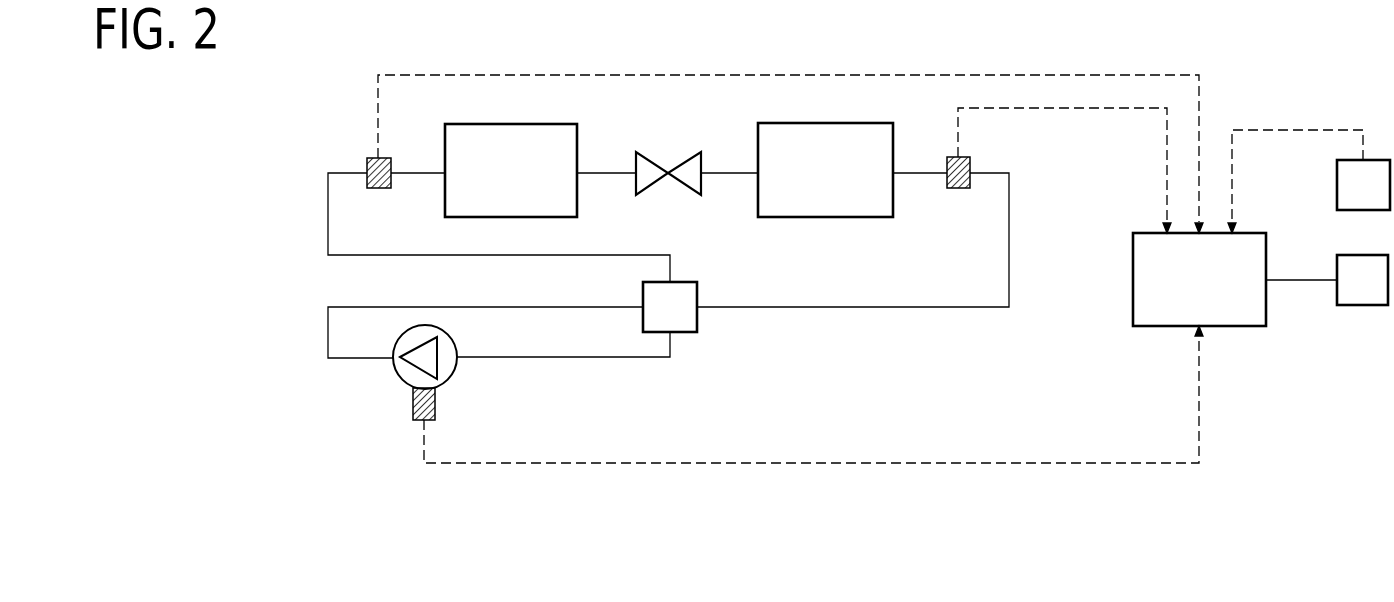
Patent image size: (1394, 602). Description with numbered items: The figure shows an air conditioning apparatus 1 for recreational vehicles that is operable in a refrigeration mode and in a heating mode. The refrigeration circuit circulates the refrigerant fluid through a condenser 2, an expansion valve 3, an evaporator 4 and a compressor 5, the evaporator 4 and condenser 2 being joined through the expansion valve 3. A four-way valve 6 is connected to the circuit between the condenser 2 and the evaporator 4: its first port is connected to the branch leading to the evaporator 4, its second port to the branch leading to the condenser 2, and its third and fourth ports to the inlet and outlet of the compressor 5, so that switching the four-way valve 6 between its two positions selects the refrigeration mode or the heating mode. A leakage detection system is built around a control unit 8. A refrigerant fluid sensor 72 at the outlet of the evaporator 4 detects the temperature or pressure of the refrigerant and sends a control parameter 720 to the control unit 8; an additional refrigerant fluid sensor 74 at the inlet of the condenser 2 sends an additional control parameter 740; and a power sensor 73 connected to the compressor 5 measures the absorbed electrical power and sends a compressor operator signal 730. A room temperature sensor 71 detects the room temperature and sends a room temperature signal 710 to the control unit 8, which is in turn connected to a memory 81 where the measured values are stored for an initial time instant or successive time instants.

The air conditioning apparatus 1 is at (280, 230).
The condenser 2 is at (818, 184).
The expansion valve 3 is at (668, 160).
The evaporator 4 is at (504, 184).
The compressor 5 is at (393, 370).
The four-way valve 6 is at (663, 320).
The control unit 8 is at (1192, 294).
The room temperature sensor 71 is at (1350, 200).
The refrigerant fluid sensor 72 is at (367, 157).
The power sensor 73 is at (412, 410).
The additional refrigerant fluid sensor 74 is at (953, 190).
The memory 81 is at (1350, 292).
The room temperature signal 710 is at (1312, 130).
The control parameter 720 is at (513, 75).
The compressor operator signal 730 is at (963, 463).
The additional control parameter 740 is at (1068, 110).